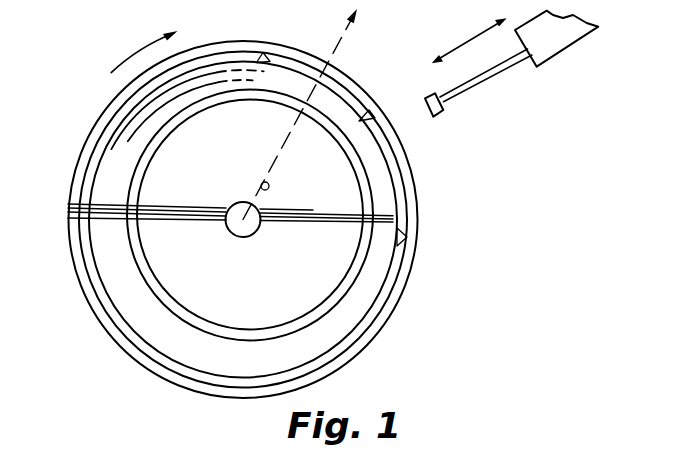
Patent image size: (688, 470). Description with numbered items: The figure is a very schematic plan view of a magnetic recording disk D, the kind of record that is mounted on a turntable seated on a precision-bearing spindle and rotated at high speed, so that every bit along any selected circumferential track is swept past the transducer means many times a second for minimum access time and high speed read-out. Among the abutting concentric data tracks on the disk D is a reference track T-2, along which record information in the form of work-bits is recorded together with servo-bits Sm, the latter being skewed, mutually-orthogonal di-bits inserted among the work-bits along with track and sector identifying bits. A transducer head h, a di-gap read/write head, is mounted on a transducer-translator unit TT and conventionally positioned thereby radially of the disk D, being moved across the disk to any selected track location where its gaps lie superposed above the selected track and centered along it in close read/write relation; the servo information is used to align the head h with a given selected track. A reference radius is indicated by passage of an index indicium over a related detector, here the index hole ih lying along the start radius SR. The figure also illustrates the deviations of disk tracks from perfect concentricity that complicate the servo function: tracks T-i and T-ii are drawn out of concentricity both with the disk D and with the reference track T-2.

The magnetic recording disk D is at (79, 137).
The start radius SR is at (318, 112).
The transducer-translator unit TT is at (572, 48).
The transducer head h is at (445, 110).
The reference track T-2 is at (402, 198).
The servo-bits Sm is at (400, 231).
The index hole ih is at (279, 178).
The track T-ii is at (155, 281).
The track T-i is at (162, 298).